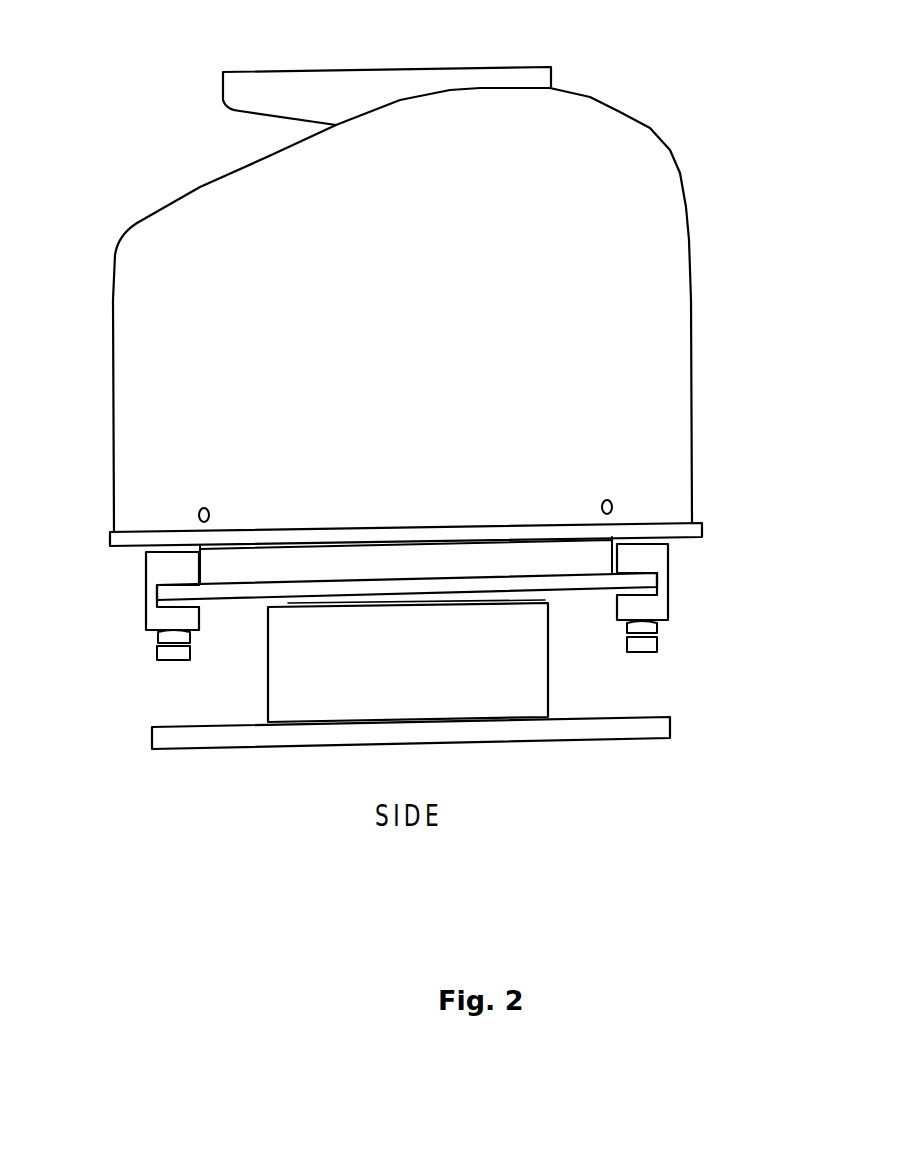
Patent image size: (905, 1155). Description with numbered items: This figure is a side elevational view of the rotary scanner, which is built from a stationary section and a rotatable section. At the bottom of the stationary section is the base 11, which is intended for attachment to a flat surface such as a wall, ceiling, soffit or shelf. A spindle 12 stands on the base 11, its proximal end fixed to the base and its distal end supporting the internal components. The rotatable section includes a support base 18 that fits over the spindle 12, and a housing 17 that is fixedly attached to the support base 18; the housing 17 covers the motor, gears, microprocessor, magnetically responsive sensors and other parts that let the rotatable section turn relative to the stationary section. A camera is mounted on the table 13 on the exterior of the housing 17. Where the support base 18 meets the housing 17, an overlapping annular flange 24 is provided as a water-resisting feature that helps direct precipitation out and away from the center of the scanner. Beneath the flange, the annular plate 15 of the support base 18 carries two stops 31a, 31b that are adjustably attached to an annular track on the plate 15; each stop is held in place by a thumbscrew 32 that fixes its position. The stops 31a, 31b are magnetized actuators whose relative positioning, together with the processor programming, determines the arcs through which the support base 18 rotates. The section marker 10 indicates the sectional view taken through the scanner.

The section line 10 is at (105, 468).
The base 11 is at (190, 738).
The spindle 12 is at (532, 677).
The table 13 is at (360, 82).
The annular plate 15 is at (245, 593).
The housing 17 is at (147, 353).
The support base 18 is at (545, 563).
The overlapping annular flange 24 is at (108, 540).
The stop 31a is at (155, 570).
The stop 31b is at (657, 562).
The thumbscrew 32 is at (653, 643).